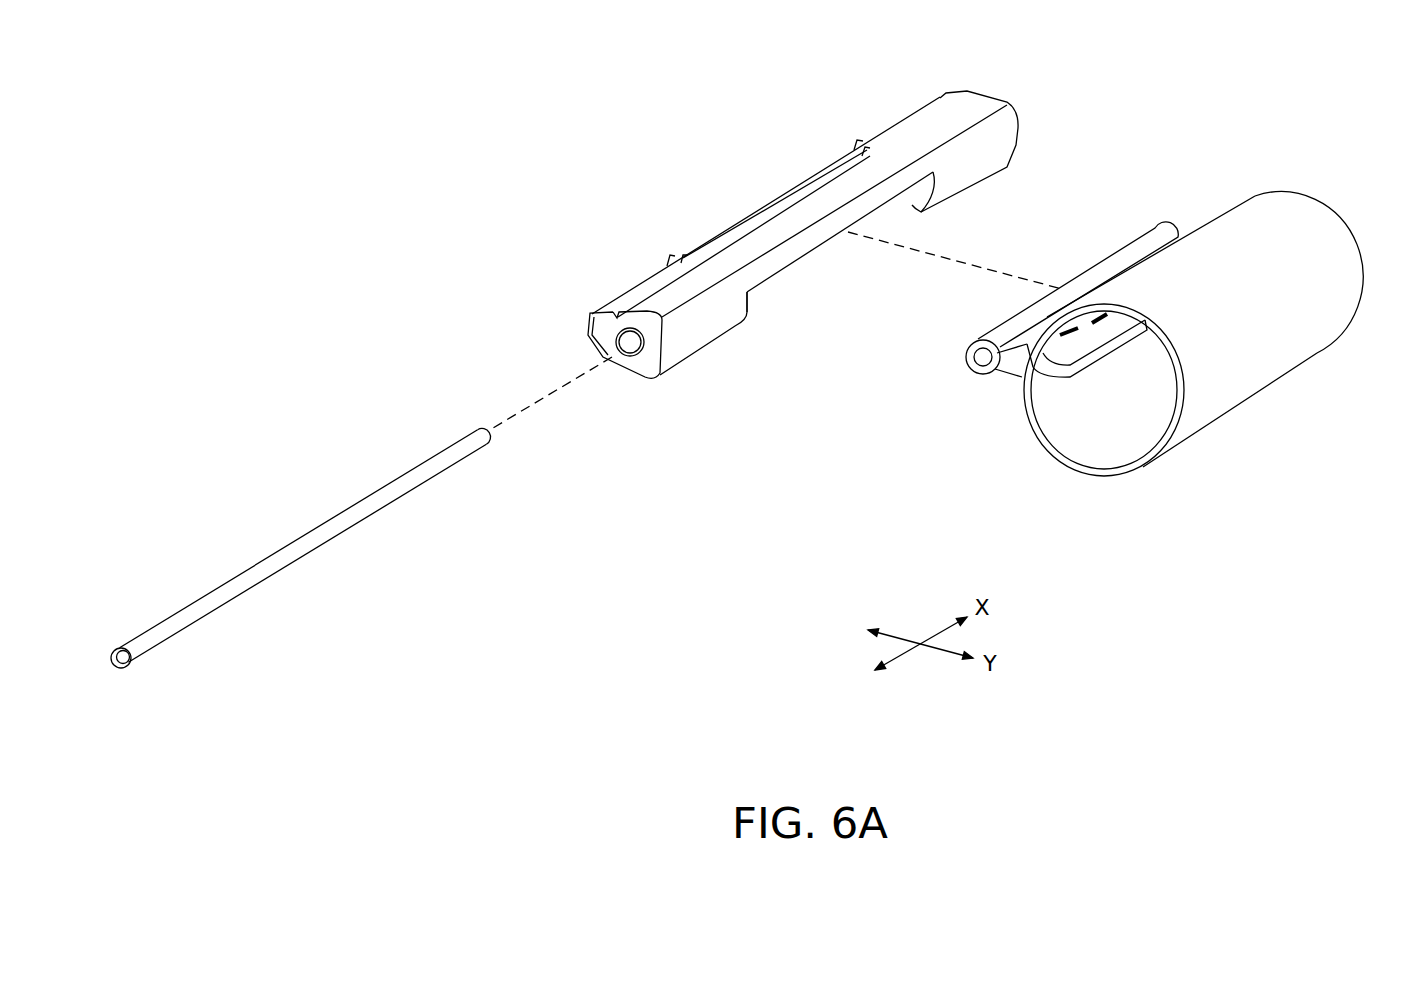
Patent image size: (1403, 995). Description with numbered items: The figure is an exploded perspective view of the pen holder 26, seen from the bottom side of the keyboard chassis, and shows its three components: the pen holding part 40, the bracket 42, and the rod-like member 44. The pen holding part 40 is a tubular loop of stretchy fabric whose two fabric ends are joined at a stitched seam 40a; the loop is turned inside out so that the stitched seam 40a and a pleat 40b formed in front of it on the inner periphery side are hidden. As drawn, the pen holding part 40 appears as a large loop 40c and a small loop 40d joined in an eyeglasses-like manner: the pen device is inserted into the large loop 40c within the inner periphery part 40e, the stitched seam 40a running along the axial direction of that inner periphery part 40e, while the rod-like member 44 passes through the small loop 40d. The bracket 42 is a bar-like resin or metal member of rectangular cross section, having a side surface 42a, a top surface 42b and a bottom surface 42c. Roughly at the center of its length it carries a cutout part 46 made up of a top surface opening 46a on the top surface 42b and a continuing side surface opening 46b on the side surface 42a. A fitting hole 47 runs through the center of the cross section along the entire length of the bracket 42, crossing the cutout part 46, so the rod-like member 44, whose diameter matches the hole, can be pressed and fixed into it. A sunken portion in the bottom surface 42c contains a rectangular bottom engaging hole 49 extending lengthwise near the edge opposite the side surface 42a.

The pen holder 26 is at (456, 204).
The pen holding part 40 is at (1262, 432).
The stitched seam 40a is at (1070, 335).
The pleat 40b is at (1103, 352).
The large loop 40c is at (1287, 347).
The small loop 40d is at (1028, 317).
The inner periphery part 40e is at (1137, 412).
The bracket 42 is at (733, 362).
The side surface 42a is at (688, 333).
The top surface 42b is at (627, 363).
The bottom surface 42c is at (920, 142).
The rod-like member 44 is at (314, 587).
The cutout part 46 is at (797, 257).
The top surface opening 46a is at (903, 197).
The side surface opening 46b is at (747, 307).
The fitting hole 47 is at (630, 342).
The bottom engaging hole 49 is at (767, 210).